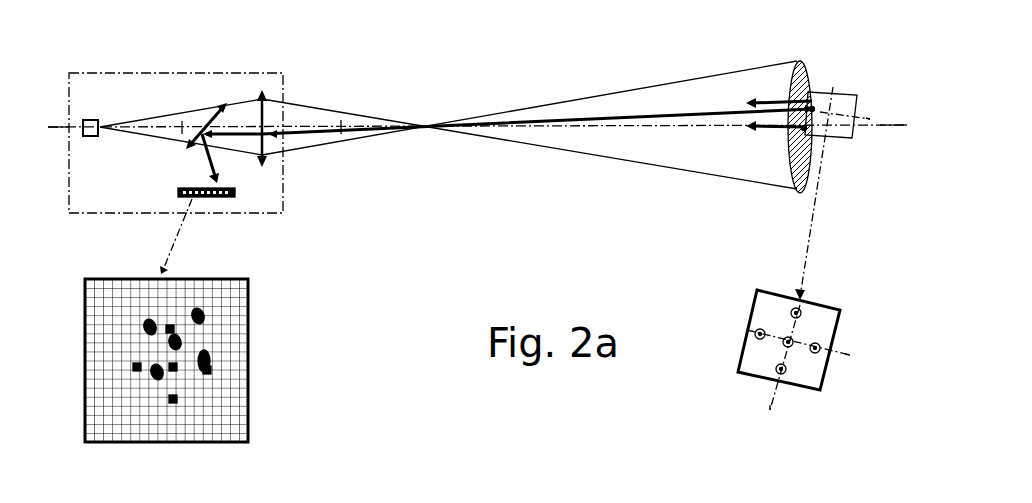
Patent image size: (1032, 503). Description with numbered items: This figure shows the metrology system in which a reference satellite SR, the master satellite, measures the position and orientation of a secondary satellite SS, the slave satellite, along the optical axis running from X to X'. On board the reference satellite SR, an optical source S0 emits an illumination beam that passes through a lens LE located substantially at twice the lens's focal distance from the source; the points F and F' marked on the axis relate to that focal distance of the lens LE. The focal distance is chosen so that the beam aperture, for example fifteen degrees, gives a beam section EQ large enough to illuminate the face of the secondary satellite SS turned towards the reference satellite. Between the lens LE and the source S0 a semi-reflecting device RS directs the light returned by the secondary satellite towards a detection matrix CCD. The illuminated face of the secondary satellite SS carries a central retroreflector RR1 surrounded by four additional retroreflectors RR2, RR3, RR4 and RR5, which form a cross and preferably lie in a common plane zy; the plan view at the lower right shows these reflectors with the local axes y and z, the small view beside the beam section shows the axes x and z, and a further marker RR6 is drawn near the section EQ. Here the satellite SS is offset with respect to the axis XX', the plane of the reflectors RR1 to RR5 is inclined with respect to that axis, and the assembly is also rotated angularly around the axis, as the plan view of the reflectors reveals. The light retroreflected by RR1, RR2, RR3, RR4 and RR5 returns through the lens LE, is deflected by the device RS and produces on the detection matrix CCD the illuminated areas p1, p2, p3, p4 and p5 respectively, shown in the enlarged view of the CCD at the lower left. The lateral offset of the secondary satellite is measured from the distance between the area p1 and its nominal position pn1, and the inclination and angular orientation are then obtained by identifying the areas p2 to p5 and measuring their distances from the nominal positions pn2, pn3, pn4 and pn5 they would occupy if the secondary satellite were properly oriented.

The optical source S0 is at (88, 119).
The reference satellite SR is at (177, 73).
The semi-reflecting device RS is at (228, 103).
The lens LE is at (267, 99).
The focal point F is at (175, 136).
The focal distance F' is at (352, 113).
The axis XX' X is at (58, 141).
The axis XX' X' is at (893, 138).
The detection matrix CCD is at (203, 198).
The section of the beam EQ is at (797, 62).
The secondary satellite SS is at (858, 106).
The reflector RR1 is at (813, 110).
The additional reflector RR2 is at (755, 334).
The additional reflector RR3 is at (801, 307).
The additional reflector RR4 is at (815, 353).
The additional reflector RR5 is at (806, 128).
The retroreflector 6 RR6 is at (793, 103).
The x axis x is at (867, 113).
The y axis y is at (848, 339).
The z axis z is at (807, 254).
The illuminated area p1 is at (178, 340).
The illuminated area p2 is at (150, 324).
The illuminated area p3 is at (200, 313).
The illuminated area p4 is at (207, 353).
The illuminated area p5 is at (157, 378).
The nominal position pn1 is at (176, 370).
The nominal position pn2 is at (134, 367).
The nominal position pn3 is at (170, 326).
The nominal position pn4 is at (208, 377).
The nominal position pn5 is at (174, 404).